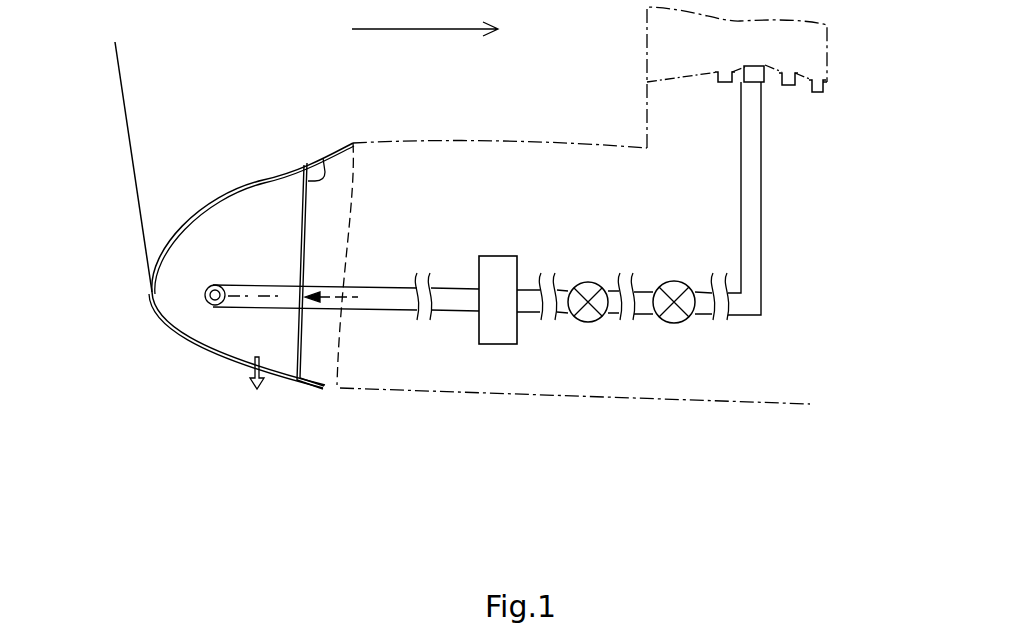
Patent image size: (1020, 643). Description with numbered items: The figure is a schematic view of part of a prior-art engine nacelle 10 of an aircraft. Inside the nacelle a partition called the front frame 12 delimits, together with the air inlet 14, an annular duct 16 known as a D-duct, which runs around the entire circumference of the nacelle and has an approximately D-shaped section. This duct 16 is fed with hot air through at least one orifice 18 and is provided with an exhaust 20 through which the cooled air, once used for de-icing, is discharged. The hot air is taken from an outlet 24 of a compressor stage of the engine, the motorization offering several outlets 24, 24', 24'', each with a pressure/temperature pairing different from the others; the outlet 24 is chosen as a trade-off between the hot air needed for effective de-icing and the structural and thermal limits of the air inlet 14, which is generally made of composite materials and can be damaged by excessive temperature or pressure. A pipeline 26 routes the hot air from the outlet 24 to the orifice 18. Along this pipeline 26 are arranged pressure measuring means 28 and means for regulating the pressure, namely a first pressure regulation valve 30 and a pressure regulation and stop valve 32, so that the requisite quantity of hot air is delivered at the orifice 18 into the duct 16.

The engine nacelle 10 is at (658, 502).
The front frame 12 is at (323, 158).
The air inlet 14 is at (238, 286).
The annular duct 16 is at (267, 203).
The orifice 18 is at (205, 292).
The exhaust 20 is at (270, 377).
The outlet 24 is at (777, 142).
The outlet 24' is at (701, 129).
The outlet 24'' is at (823, 126).
The pipeline 26 is at (443, 300).
The pressure measuring means 28 is at (502, 338).
The first pressure regulation valve 30 is at (588, 323).
The pressure regulation and stop valve 32 is at (673, 325).